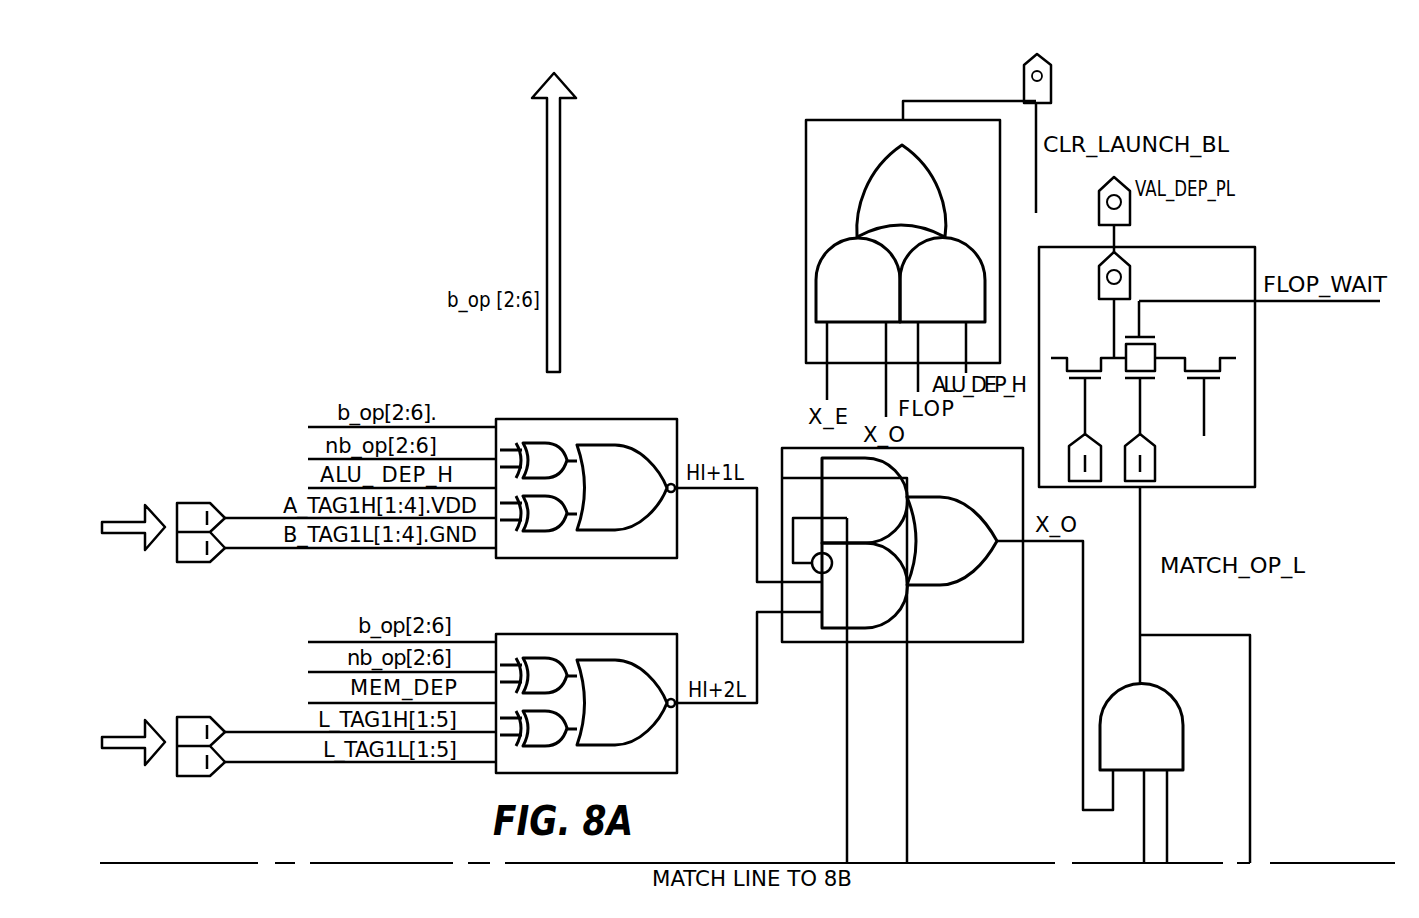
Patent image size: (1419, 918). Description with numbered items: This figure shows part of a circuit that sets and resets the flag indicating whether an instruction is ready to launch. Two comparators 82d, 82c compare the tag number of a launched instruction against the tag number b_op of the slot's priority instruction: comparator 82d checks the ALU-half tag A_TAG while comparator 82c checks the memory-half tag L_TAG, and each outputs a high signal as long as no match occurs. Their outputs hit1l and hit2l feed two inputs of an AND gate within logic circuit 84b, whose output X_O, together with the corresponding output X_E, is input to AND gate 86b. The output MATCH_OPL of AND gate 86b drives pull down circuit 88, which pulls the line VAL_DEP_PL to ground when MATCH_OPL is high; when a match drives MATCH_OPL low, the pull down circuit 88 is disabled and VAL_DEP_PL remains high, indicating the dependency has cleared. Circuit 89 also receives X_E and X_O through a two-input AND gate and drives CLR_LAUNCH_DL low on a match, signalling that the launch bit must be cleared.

The comparator 82d is at (623, 419).
The comparator 82c is at (622, 634).
The logic circuit 84b is at (983, 642).
The circuit for clearing the launch ready signal 89 is at (823, 120).
The pull down circuit 88 is at (1212, 247).
The AND gate 86b is at (1167, 693).